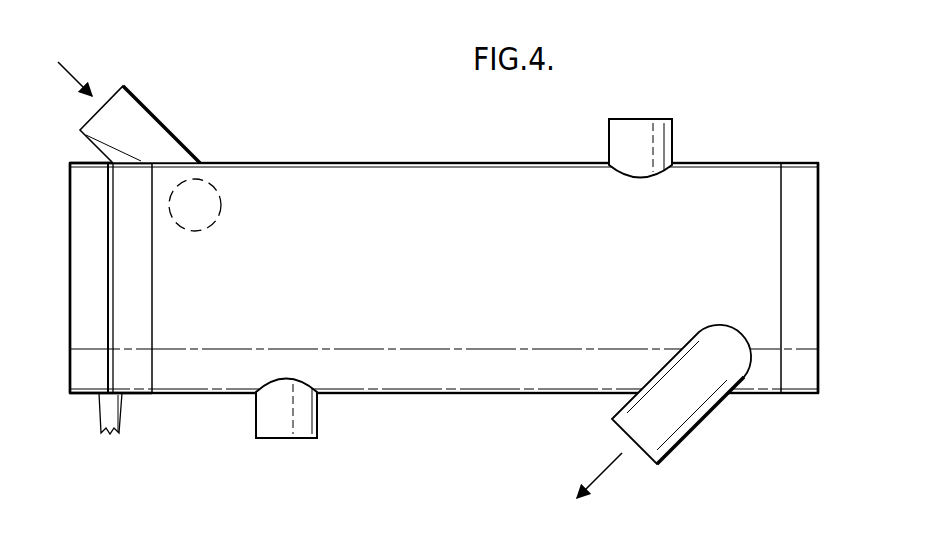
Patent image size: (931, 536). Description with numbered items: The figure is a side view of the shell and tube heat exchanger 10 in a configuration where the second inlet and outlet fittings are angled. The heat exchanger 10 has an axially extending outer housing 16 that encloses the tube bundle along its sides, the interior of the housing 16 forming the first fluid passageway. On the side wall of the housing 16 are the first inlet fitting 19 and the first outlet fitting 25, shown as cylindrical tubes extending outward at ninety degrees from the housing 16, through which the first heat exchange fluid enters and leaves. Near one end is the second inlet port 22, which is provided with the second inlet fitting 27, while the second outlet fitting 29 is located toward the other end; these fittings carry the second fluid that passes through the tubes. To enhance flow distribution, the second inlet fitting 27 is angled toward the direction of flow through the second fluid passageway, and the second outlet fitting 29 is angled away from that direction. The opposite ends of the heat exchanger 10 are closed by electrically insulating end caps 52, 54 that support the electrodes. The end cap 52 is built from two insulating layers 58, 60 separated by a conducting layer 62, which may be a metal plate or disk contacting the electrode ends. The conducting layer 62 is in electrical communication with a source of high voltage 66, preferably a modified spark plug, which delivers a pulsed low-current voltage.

The heat exchanger 10 is at (443, 400).
The housing 16 is at (428, 292).
The first inlet fitting 19 is at (672, 130).
The second inlet port 22 is at (203, 190).
The first outlet fitting 25 is at (317, 418).
The second inlet fitting 27 is at (160, 118).
The second outlet fitting 29 is at (692, 432).
The end cap 52 is at (60, 176).
The end cap 54 is at (810, 187).
The insulating layer 58 is at (152, 298).
The insulating layer 60 is at (88, 245).
The conducting layer 62 is at (108, 337).
The source of high voltage 66 is at (122, 418).